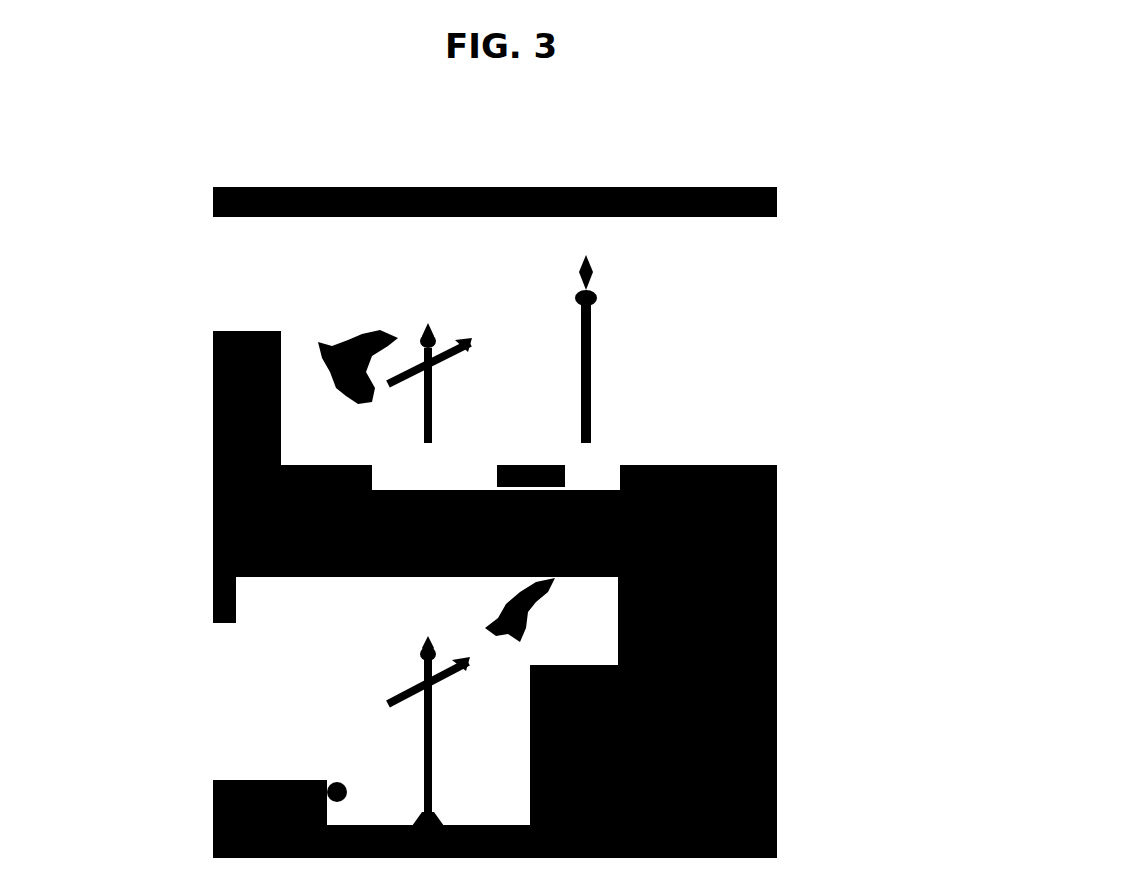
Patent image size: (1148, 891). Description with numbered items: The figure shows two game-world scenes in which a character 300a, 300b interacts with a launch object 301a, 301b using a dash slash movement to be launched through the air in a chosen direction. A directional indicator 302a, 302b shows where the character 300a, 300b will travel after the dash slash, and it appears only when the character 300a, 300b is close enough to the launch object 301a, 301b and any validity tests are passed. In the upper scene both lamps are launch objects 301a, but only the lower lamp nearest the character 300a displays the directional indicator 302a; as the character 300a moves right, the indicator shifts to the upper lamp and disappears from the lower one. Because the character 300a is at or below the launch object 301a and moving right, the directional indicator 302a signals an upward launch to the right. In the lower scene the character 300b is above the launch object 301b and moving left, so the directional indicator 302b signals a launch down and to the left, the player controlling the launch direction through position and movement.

The character 300a is at (337, 363).
The character 300b is at (513, 602).
The launch object 301a is at (407, 368).
The launch object 301b is at (647, 698).
The directional indicator 302a is at (395, 380).
The directional indicator 302b is at (777, 723).